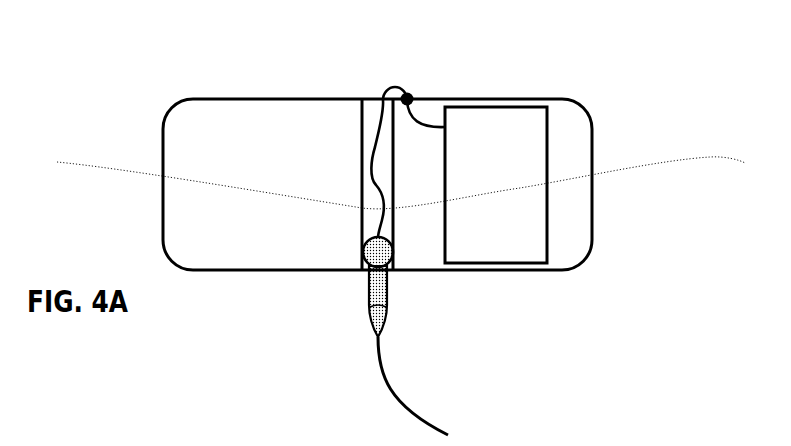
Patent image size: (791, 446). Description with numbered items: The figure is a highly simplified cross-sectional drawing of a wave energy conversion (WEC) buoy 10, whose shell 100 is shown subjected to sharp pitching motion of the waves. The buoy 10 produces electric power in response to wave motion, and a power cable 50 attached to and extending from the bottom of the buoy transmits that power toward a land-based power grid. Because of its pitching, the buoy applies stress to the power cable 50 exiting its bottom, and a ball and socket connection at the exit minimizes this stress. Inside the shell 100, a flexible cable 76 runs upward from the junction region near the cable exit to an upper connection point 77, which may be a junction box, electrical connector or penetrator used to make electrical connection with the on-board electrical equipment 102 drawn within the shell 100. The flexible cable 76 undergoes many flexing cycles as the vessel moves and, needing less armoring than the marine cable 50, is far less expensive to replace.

The wave energy conversion (WEC) buoy 10 is at (160, 63).
The power cable 50 is at (385, 387).
The flexible cable 76 is at (378, 142).
The upper connection point 77 is at (409, 96).
The shell 100 is at (593, 136).
The electrical equipment 102 is at (513, 240).